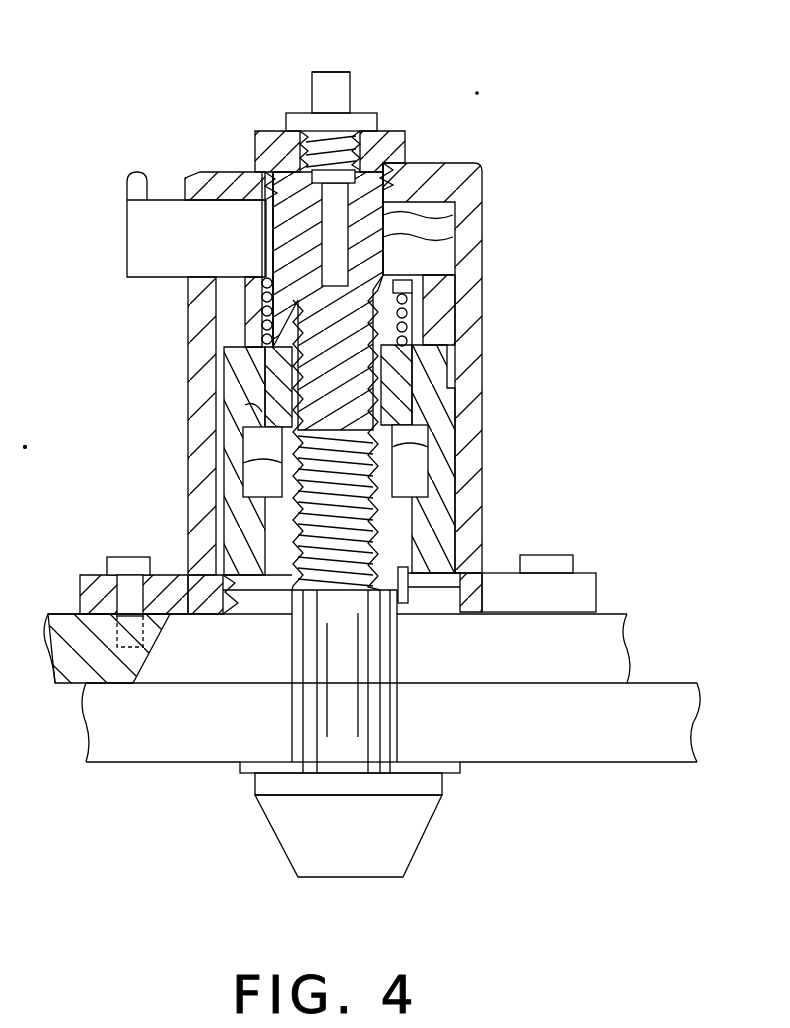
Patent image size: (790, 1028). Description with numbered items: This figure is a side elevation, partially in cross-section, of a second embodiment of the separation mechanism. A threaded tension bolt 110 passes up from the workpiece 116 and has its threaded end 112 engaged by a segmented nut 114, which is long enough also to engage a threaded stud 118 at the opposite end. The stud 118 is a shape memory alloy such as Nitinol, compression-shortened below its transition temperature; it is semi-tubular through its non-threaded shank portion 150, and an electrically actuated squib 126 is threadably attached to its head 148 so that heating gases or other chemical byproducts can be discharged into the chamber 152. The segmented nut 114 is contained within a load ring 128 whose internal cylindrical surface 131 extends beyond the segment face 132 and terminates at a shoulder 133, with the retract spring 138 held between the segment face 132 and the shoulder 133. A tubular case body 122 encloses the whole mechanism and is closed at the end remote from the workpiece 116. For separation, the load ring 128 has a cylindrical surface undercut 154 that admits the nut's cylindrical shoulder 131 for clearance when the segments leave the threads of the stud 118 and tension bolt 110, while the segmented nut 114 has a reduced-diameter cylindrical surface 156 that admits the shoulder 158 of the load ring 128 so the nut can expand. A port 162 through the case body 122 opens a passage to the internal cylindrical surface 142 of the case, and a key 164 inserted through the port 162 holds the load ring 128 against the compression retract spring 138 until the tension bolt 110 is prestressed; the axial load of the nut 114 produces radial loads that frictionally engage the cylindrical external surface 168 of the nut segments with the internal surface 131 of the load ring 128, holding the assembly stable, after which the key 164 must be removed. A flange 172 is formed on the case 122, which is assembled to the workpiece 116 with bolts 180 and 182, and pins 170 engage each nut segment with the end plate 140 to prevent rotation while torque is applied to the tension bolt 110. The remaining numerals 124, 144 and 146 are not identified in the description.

The threaded tension bolt 110 is at (422, 828).
The threaded end 112 is at (380, 520).
The segmented nut 114 is at (428, 437).
The workpiece 116 is at (632, 646).
The threaded stud 118 is at (440, 206).
The tubular case body 122 is at (470, 168).
The washer / base plate 124 is at (375, 125).
The electrically actuated squib 126 is at (350, 88).
The load ring 128 is at (465, 363).
The internal cylindrical surface 131 is at (454, 410).
The segment face 132 is at (408, 320).
The shoulder 133 is at (445, 290).
The retract spring 138 is at (254, 324).
The end plate 140 is at (455, 612).
The internal cylindrical surface 142 is at (200, 580).
The bracket 144 is at (215, 180).
The head top 146 is at (331, 72).
The head 148 is at (275, 154).
The non-threaded shank portion 150 is at (430, 235).
The chamber 152 is at (340, 215).
The cylindrical surface undercut 154 is at (428, 490).
The cylindrical surface 156 is at (262, 460).
The shoulder 158 is at (263, 510).
The port 162 is at (200, 288).
The key 164 is at (140, 232).
The cylindrical external surface 168 is at (247, 415).
The pins 170 is at (403, 605).
The flange 172 is at (597, 590).
The bolt 180 is at (108, 560).
The bolt 182 is at (554, 554).